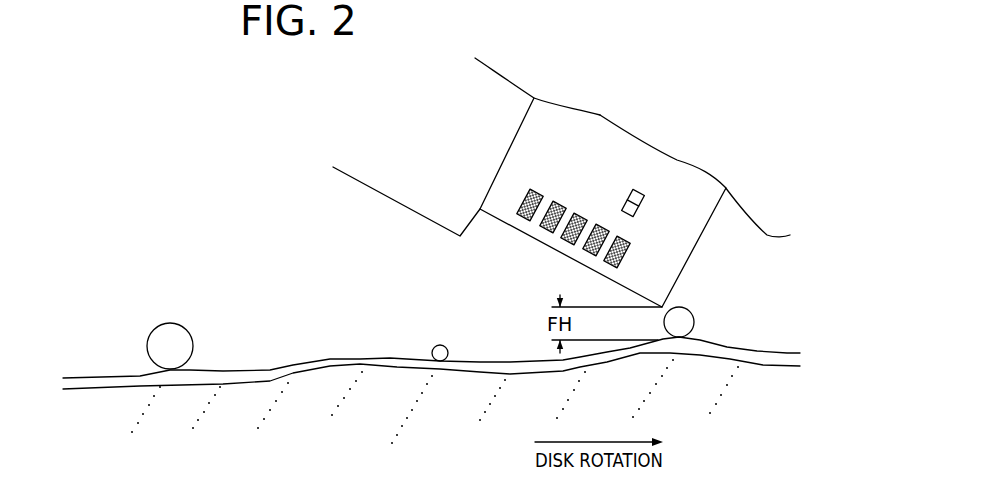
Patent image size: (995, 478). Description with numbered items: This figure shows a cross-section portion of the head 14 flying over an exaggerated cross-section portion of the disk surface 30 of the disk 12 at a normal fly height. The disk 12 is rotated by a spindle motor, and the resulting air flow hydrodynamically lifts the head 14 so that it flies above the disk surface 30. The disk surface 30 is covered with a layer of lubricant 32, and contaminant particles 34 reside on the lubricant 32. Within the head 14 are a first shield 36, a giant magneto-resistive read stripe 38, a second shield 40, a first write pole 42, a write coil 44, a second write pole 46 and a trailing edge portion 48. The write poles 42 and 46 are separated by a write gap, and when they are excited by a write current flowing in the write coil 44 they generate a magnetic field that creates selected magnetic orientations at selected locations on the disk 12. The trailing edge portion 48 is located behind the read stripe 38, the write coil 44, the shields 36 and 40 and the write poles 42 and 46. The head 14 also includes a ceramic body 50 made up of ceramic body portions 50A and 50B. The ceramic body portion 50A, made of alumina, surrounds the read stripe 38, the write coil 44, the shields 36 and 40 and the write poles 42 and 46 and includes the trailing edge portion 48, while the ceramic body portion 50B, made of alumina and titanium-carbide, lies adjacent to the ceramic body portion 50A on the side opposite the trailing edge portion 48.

The disk 12 is at (431, 397).
The head 14 is at (518, 169).
The disk surface 30 is at (271, 381).
The lubricant 32 is at (137, 373).
The contaminant particles 34 is at (186, 330).
The first shield 36 is at (535, 190).
The giant magneto-resistive (GMR) read stripe 38 is at (557, 203).
The second shield 40 is at (577, 213).
The first write pole 42 is at (597, 227).
The write coil 44 is at (641, 205).
The second write pole 46 is at (628, 240).
The trailing edge portion 48 is at (665, 274).
The ceramic body 50 is at (561, 169).
The ceramic body portion 50A is at (601, 117).
The ceramic body portion 50B is at (487, 66).